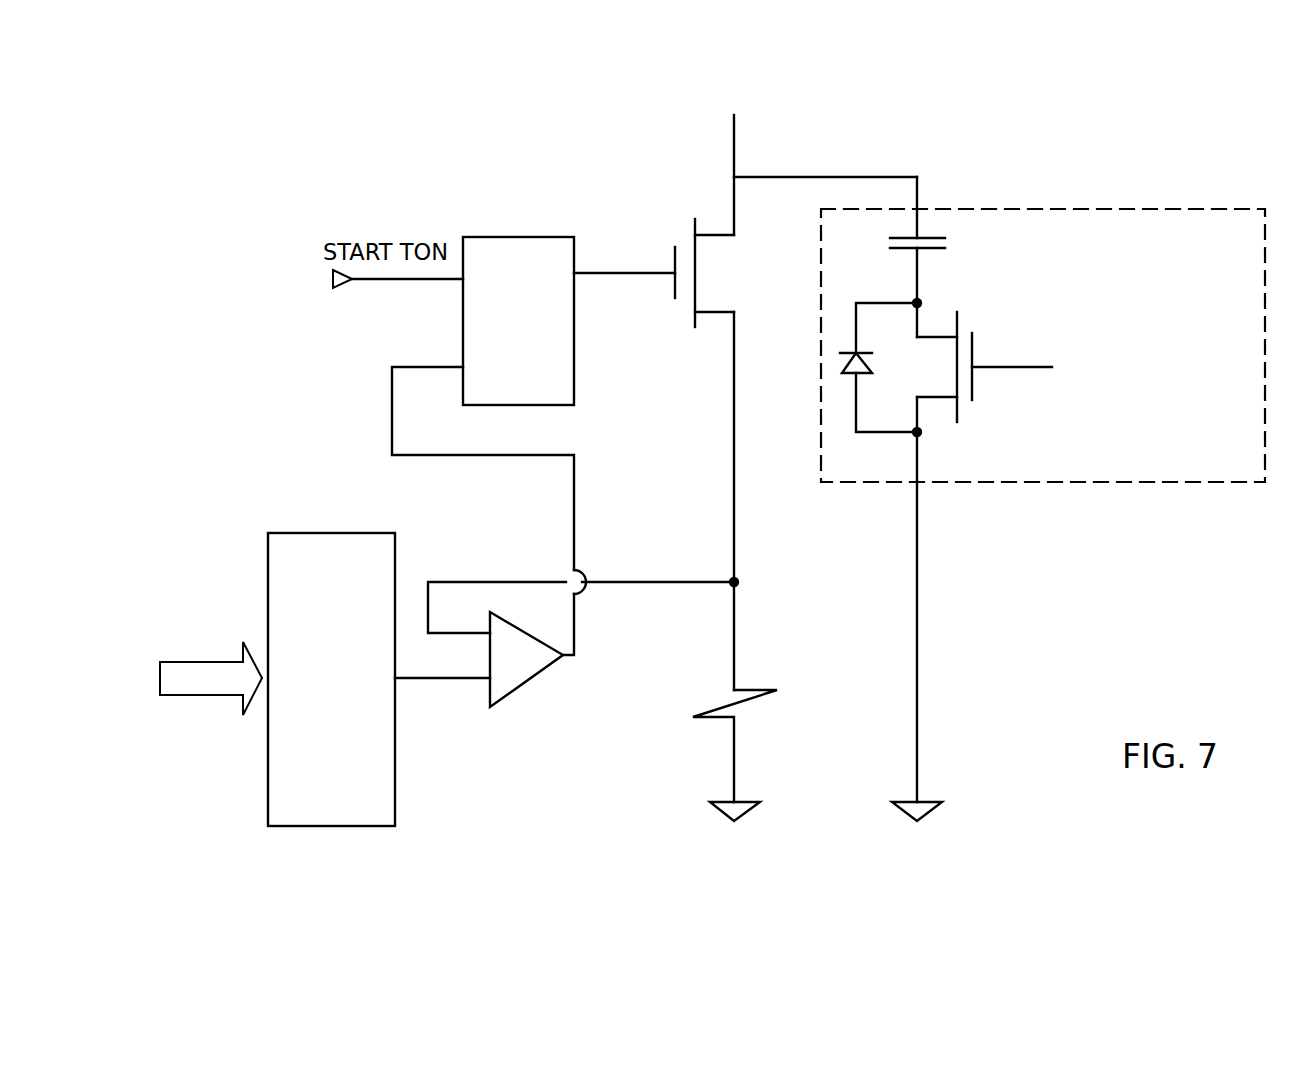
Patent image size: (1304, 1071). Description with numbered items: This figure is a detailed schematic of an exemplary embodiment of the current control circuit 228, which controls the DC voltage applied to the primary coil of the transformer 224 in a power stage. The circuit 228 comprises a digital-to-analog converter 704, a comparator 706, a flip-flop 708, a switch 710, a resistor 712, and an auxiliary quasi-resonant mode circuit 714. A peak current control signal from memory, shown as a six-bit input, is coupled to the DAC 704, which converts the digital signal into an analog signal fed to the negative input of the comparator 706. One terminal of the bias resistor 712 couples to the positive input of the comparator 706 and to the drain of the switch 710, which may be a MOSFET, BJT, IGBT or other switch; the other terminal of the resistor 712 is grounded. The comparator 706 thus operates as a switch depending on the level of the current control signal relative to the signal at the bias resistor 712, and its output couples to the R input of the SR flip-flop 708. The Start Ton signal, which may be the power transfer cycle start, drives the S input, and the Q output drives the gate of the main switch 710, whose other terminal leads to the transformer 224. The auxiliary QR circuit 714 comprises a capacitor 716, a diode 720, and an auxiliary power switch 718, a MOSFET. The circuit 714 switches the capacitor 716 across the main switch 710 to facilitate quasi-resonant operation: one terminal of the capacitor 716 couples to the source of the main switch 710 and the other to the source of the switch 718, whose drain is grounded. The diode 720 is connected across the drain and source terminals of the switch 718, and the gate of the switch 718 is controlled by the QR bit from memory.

The digital-to-analog converter 704 is at (397, 797).
The comparator 706 is at (540, 675).
The flip-flop 708 is at (528, 237).
The switch 710 is at (672, 258).
The resistor 712 is at (758, 690).
The auxiliary quasi-resonant mode circuit 714 is at (1049, 207).
The capacitor 716 is at (930, 252).
The auxiliary power switch 718 is at (973, 345).
The diode 720 is at (848, 377).
The transformer 224 is at (858, 156).
The current control circuit 228 is at (1247, 162).